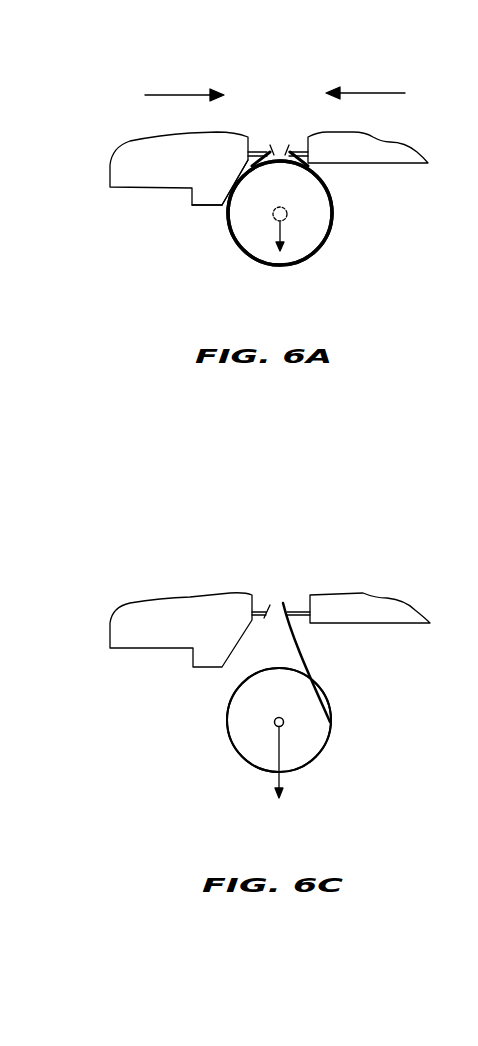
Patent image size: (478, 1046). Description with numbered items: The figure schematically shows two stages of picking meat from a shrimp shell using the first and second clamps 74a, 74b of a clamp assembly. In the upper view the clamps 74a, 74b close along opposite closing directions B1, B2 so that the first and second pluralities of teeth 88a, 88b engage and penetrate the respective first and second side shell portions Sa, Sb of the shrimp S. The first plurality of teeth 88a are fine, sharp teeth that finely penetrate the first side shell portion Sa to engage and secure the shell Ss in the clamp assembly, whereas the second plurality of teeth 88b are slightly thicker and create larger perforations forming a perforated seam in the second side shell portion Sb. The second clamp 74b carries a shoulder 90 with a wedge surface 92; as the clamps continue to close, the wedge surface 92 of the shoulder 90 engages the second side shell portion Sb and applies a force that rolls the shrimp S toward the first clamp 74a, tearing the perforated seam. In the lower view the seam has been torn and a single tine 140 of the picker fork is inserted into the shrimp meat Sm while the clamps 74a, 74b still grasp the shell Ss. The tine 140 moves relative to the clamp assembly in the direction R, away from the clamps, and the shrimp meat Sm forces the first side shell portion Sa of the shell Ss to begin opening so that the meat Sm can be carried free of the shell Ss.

In FIG. 6A, the second clamp 74b is at (140, 165).
In FIG. 6C, the second clamp 74b is at (142, 625).
In FIG. 6A, the first clamp 74a is at (387, 150).
In FIG. 6C, the first clamp 74a is at (390, 610).
In FIG. 6A, the second plurality of teeth 88b is at (253, 150).
In FIG. 6A, the first plurality of teeth 88a is at (298, 150).
In FIG. 6A, the second side shell portion Sb is at (270, 150).
In FIG. 6A, the first side shell portion Sa is at (279, 150).
In FIG. 6A, the closing direction of first clamp B1 is at (365, 81).
In FIG. 6A, the closing direction of second clamp B2 is at (184, 83).
In FIG. 6A, the shoulder 90 is at (197, 207).
In FIG. 6A, the wedge surface 92 is at (225, 203).
In FIG. 6A, the shrimp S is at (226, 246).
In FIG. 6C, the shrimp S is at (220, 722).
In FIG. 6A, the shrimp meat Sm is at (313, 237).
In FIG. 6C, the shrimp meat Sm is at (255, 745).
In FIG. 6A, the shrimp shell Ss is at (303, 265).
In FIG. 6C, the shrimp shell Ss is at (310, 657).
In FIG. 6C, the tine 140 is at (285, 717).
In FIG. 6C, the direction of movement of tine R is at (287, 782).